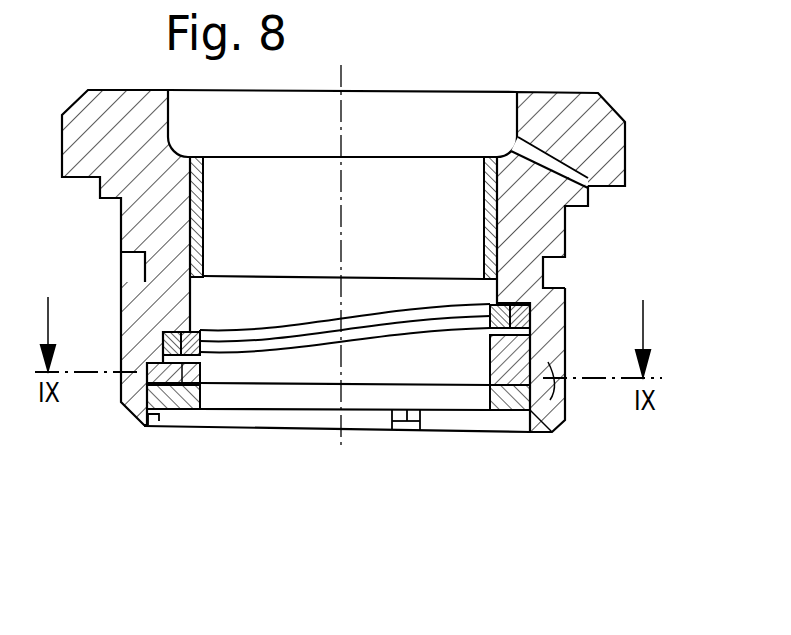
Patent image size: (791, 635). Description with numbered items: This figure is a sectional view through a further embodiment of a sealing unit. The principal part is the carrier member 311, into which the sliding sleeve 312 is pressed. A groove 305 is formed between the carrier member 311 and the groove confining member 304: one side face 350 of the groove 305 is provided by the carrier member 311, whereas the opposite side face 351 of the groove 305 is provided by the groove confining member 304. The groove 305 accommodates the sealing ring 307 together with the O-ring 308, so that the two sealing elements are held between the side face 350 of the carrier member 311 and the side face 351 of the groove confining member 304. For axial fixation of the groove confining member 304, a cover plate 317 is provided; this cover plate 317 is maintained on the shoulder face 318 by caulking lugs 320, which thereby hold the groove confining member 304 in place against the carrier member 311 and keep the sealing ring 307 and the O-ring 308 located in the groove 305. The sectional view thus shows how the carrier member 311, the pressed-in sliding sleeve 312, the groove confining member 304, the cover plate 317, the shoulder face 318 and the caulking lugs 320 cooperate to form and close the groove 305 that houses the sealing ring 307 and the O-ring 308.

The carrier member 311 is at (603, 132).
The sliding sleeve 312 is at (499, 222).
The O-ring 308 is at (552, 290).
The sealing ring 307 is at (485, 303).
The side face 350 is at (178, 327).
The groove 305 is at (228, 320).
The side face 351 is at (199, 411).
The groove confining member 304 is at (488, 378).
The cover plate 317 is at (532, 433).
The shoulder face 318 is at (556, 385).
The caulking lugs 320 is at (157, 427).